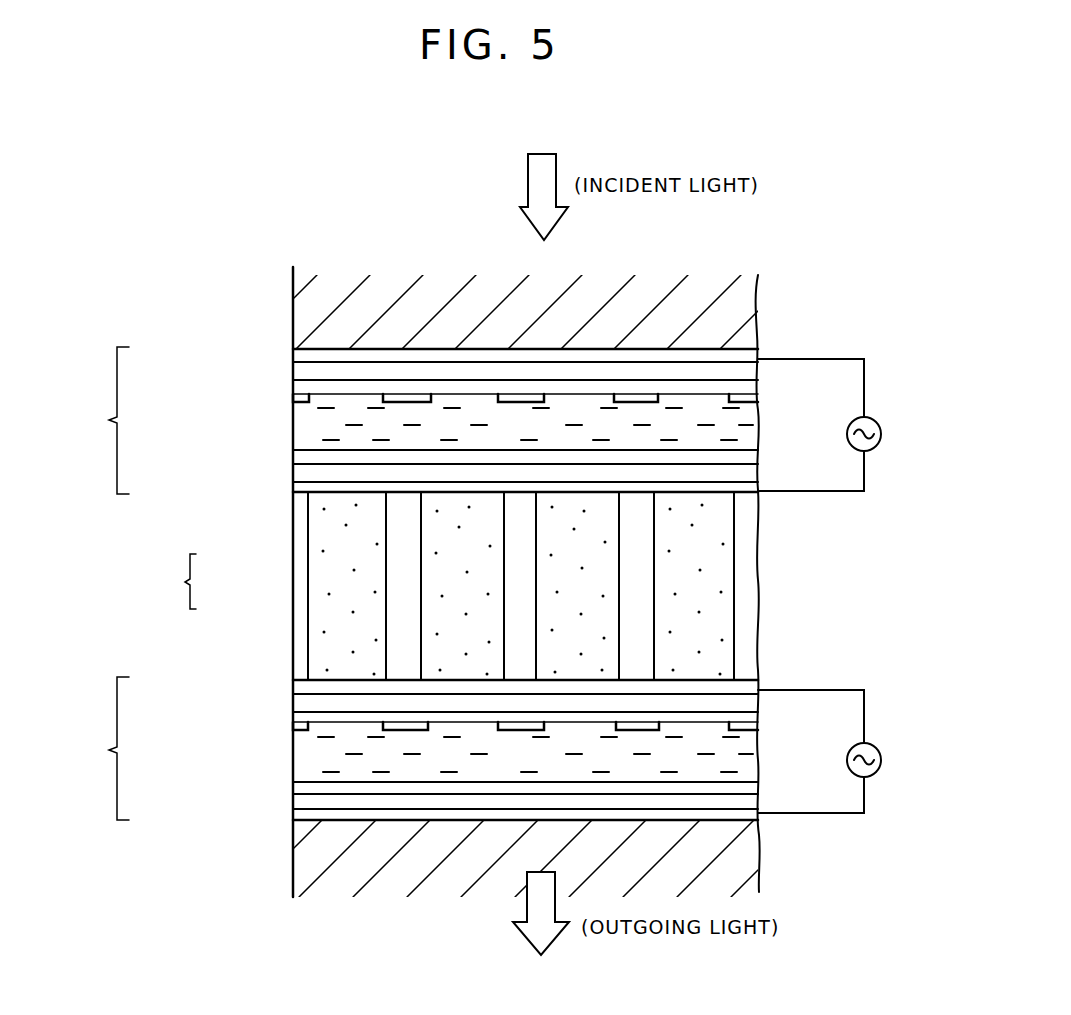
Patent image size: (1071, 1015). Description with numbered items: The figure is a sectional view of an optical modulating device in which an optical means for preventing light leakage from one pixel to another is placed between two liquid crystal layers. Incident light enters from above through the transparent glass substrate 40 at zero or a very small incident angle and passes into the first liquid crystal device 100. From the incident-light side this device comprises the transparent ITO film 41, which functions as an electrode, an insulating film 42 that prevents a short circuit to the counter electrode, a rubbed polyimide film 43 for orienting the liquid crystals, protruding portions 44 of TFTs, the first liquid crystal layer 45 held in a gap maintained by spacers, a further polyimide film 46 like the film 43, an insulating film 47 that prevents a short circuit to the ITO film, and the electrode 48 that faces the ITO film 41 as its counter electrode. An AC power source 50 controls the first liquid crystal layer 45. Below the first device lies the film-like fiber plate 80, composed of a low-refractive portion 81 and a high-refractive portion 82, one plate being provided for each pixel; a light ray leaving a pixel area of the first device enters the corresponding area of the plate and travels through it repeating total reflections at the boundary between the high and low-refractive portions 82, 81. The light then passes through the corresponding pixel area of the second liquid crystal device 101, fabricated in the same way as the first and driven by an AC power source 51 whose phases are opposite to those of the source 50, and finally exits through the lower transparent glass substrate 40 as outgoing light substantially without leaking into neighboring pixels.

The transparent glass substrate 40 is at (315, 298).
The transparent ITO film 41 is at (292, 352).
The insulating film 42 is at (292, 368).
The polyimide film 43 is at (292, 384).
The protruding portions of TFTs 44 is at (293, 393).
The first liquid crystal layer 45 is at (303, 423).
The polyimide film 46 is at (292, 455).
The insulating film 47 is at (292, 472).
The electrode 48 is at (292, 487).
The AC power source 50 is at (875, 450).
The AC power source 51 is at (872, 772).
The film-like fiber plate 80 is at (438, 586).
The low-refractive portion 81 is at (298, 559).
The high-refractive portion 82 is at (320, 590).
The first liquid crystal device 100 is at (91, 420).
The second liquid crystal device 101 is at (91, 748).